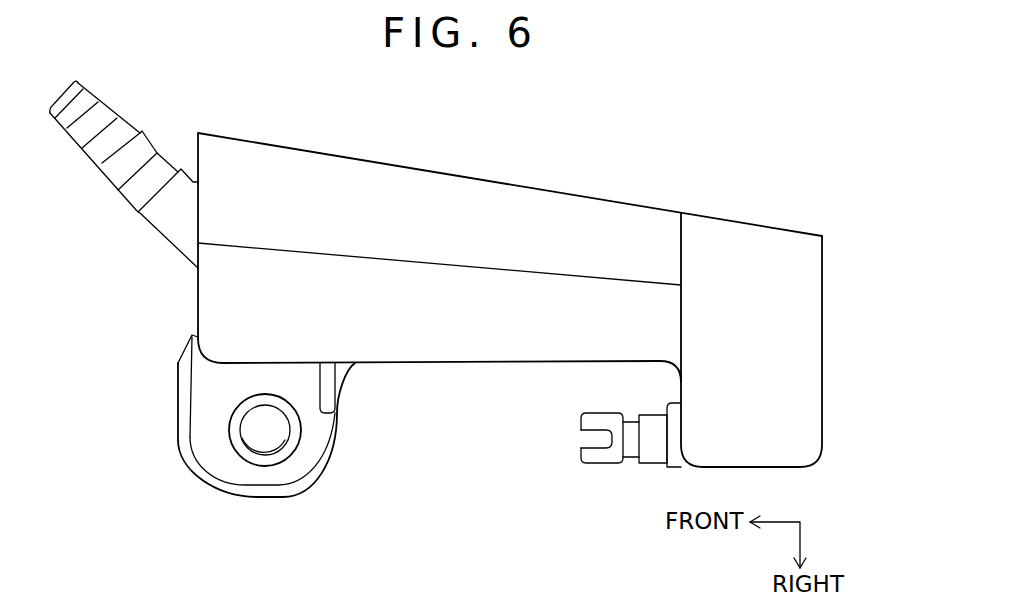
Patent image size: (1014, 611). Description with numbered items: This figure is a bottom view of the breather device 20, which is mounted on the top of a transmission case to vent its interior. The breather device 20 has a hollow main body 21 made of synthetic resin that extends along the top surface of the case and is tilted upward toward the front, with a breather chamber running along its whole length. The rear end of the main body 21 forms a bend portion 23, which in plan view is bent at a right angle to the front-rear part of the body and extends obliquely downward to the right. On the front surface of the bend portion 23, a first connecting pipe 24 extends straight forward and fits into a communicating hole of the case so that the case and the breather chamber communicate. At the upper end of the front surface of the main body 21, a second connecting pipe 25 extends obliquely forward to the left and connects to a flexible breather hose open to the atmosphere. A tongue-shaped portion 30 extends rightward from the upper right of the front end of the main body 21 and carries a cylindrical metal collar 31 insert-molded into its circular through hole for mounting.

The breather device 20 is at (464, 297).
The main body 21 is at (497, 180).
The bend portion 23 is at (822, 425).
The first connecting pipe 24 is at (600, 464).
The second connecting pipe 25 is at (110, 181).
The tongue-shaped portion 30 is at (322, 472).
The cylindrical metal collar 31 is at (229, 428).